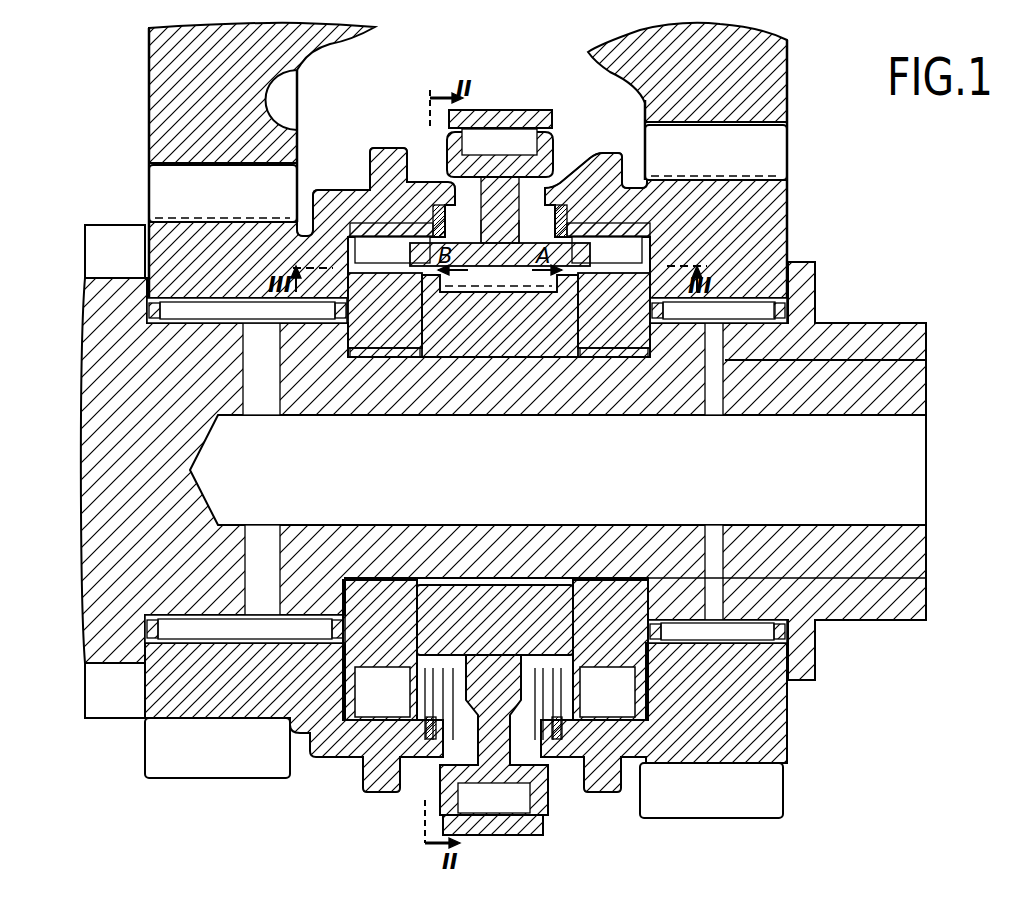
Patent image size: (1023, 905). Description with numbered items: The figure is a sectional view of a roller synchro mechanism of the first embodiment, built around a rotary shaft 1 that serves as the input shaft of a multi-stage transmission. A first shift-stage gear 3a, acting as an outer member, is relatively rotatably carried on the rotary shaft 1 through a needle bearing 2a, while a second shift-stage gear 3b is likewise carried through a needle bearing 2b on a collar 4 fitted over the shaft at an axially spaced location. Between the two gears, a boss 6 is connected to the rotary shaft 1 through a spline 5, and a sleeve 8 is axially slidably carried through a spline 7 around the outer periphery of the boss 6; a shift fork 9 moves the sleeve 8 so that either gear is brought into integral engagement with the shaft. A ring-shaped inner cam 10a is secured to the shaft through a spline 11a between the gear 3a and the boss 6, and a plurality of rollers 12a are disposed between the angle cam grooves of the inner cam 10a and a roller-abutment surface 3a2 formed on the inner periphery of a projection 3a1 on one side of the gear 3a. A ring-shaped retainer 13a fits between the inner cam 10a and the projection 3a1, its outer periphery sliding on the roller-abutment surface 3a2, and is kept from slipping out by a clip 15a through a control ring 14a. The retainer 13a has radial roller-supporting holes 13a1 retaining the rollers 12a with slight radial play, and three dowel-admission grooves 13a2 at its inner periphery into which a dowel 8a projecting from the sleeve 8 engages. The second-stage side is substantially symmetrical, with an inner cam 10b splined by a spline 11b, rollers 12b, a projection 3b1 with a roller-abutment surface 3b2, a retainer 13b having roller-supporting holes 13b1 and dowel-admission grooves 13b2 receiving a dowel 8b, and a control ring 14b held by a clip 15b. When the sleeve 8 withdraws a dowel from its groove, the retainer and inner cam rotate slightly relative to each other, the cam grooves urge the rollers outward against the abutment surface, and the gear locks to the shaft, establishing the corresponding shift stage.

The rotary shaft 1 is at (88, 420).
The needle bearing 2a is at (208, 325).
The needle bearing 2b is at (750, 300).
The first shift-stage gear 3a is at (212, 266).
The projection 3a1 is at (400, 150).
The roller-abutment surface 3a2 is at (405, 715).
The second shift-stage gear 3b is at (730, 226).
The projection 3b1 is at (585, 180).
The roller-abutment surface 3b2 is at (622, 722).
The collar 4 is at (878, 323).
The spline 5 is at (503, 360).
The boss 6 is at (500, 335).
The spline 7 is at (478, 292).
The sleeve 8 is at (504, 249).
The dowel 8a is at (422, 276).
The dowel 8b is at (570, 290).
The shift fork 9 is at (497, 127).
The inner cam 10a is at (395, 330).
The inner cam 10b is at (631, 330).
The spline 11a is at (380, 360).
The spline 11b is at (630, 360).
The rollers 12a is at (358, 684).
The rollers 12b is at (640, 693).
The retainer 13a is at (317, 202).
The roller-supporting holes 13a1 is at (397, 693).
The dowel-admission grooves 13a2 is at (372, 240).
The retainer 13b is at (655, 245).
The roller-supporting holes 13b1 is at (598, 693).
The dowel-admission grooves 13b2 is at (642, 214).
The control ring 14a is at (432, 212).
The control ring 14b is at (566, 210).
The clip 15a is at (440, 204).
The clip 15b is at (561, 204).